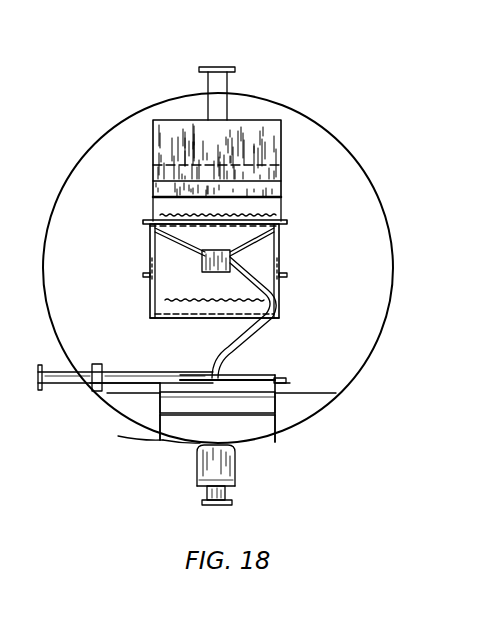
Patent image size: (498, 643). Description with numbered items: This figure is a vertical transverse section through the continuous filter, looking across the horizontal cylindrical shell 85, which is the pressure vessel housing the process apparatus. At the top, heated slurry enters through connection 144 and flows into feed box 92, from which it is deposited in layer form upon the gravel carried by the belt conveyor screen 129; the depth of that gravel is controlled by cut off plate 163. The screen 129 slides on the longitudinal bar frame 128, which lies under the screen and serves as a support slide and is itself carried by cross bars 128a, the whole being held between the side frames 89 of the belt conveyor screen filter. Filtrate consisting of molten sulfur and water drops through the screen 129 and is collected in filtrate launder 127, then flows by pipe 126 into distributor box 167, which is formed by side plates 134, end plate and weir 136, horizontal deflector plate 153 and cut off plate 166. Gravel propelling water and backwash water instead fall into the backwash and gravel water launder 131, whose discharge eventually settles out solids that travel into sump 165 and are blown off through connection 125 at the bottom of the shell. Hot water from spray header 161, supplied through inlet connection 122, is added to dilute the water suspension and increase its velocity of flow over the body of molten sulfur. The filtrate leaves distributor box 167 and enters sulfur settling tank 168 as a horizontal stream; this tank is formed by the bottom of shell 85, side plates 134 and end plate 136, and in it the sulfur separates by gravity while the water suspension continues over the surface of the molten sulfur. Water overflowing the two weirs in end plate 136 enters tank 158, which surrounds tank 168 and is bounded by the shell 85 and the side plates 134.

The horizontal cylindrical shell 85 is at (392, 270).
The slurry inlet connection 144 is at (228, 86).
The feed box 92 is at (282, 162).
The cut off plate 163 is at (158, 198).
The belt conveyor screen 129 is at (216, 213).
The longitudinal bar frame 128 is at (283, 218).
The cross bars 128a is at (258, 229).
The side frames 89 is at (150, 247).
The filtrate launder 127 is at (200, 254).
The pipe 126 is at (283, 312).
The backwash and gravel water launder 131 is at (215, 318).
The spray header 161 is at (136, 371).
The inlet connection 122 is at (48, 384).
The end plate and weir 136 is at (117, 387).
The cut off plate 166 is at (280, 386).
The tank 158 is at (222, 408).
The distributor box 167 is at (217, 403).
The sulfur settling tank 168 is at (217, 428).
The side plates 134 is at (150, 438).
The horizontal deflector plate 153 is at (164, 438).
The sump 165 is at (236, 472).
The blow-off connection 125 is at (226, 496).